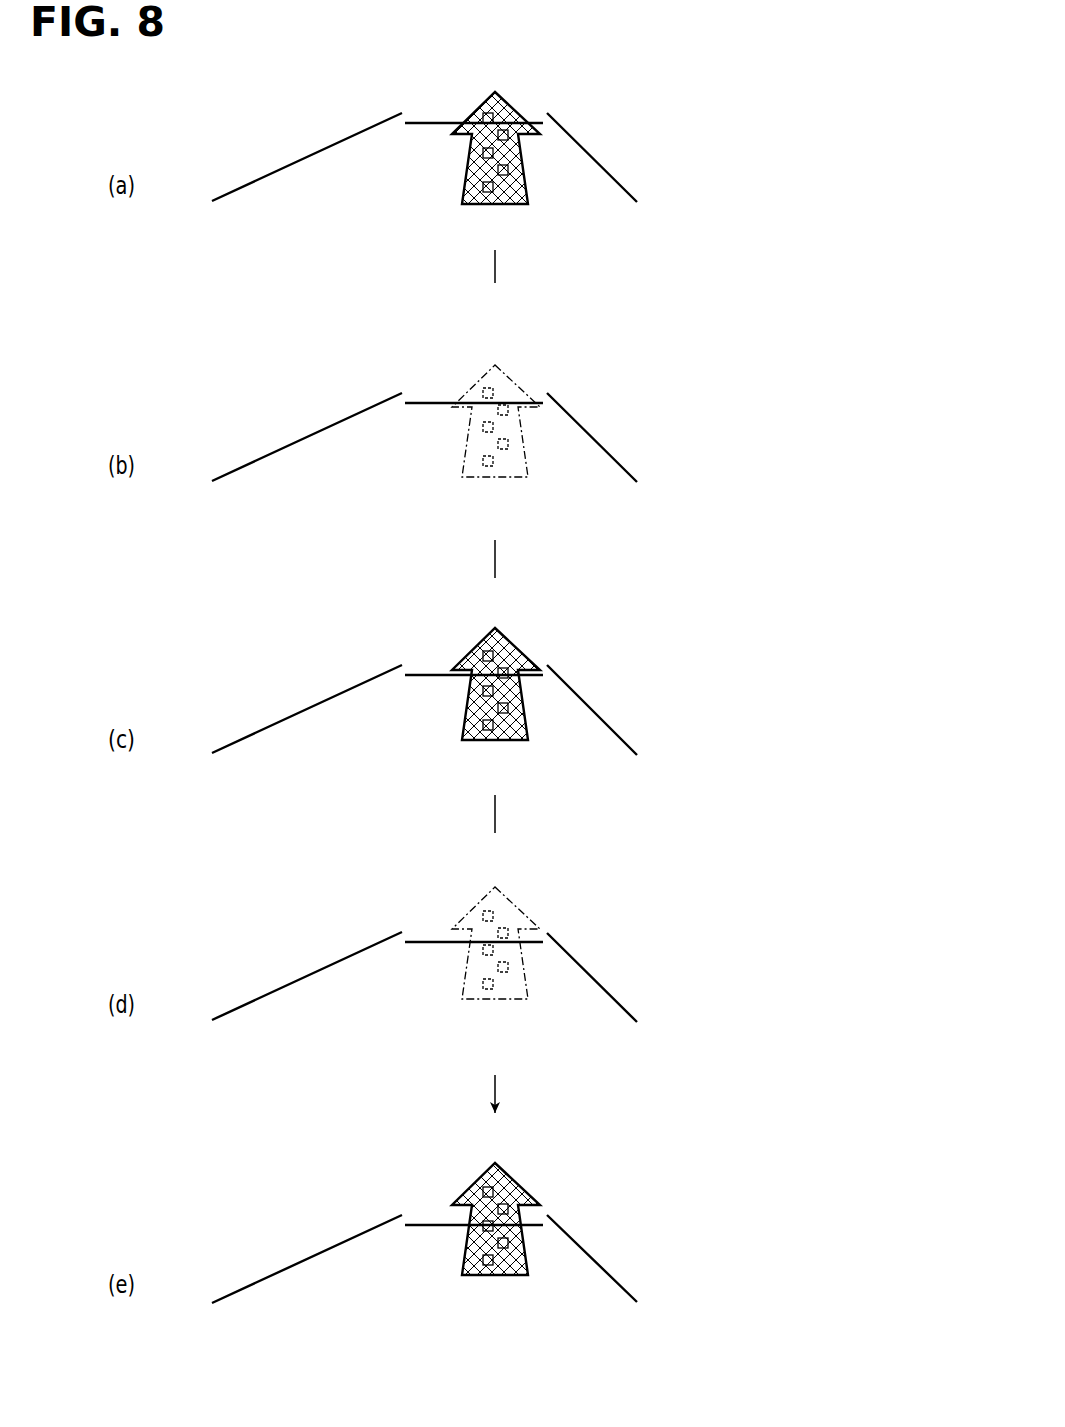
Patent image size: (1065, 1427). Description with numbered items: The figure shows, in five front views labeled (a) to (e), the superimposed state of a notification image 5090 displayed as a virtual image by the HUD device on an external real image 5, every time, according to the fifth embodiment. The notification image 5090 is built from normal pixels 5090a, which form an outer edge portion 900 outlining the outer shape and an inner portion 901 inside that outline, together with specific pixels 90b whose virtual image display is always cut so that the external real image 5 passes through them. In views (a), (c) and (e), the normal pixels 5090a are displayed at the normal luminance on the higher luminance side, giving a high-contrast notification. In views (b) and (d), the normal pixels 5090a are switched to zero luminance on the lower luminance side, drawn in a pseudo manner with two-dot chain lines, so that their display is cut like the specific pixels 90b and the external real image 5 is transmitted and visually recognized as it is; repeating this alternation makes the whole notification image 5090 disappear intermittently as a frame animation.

The external real image 5 is at (481, 105).
The notification image 5090 is at (507, 101).
The normal pixels 5090a is at (513, 106).
The specific pixels 90b is at (483, 187).
The outer edge portion 900 is at (461, 201).
The inner portion 901 is at (528, 194).